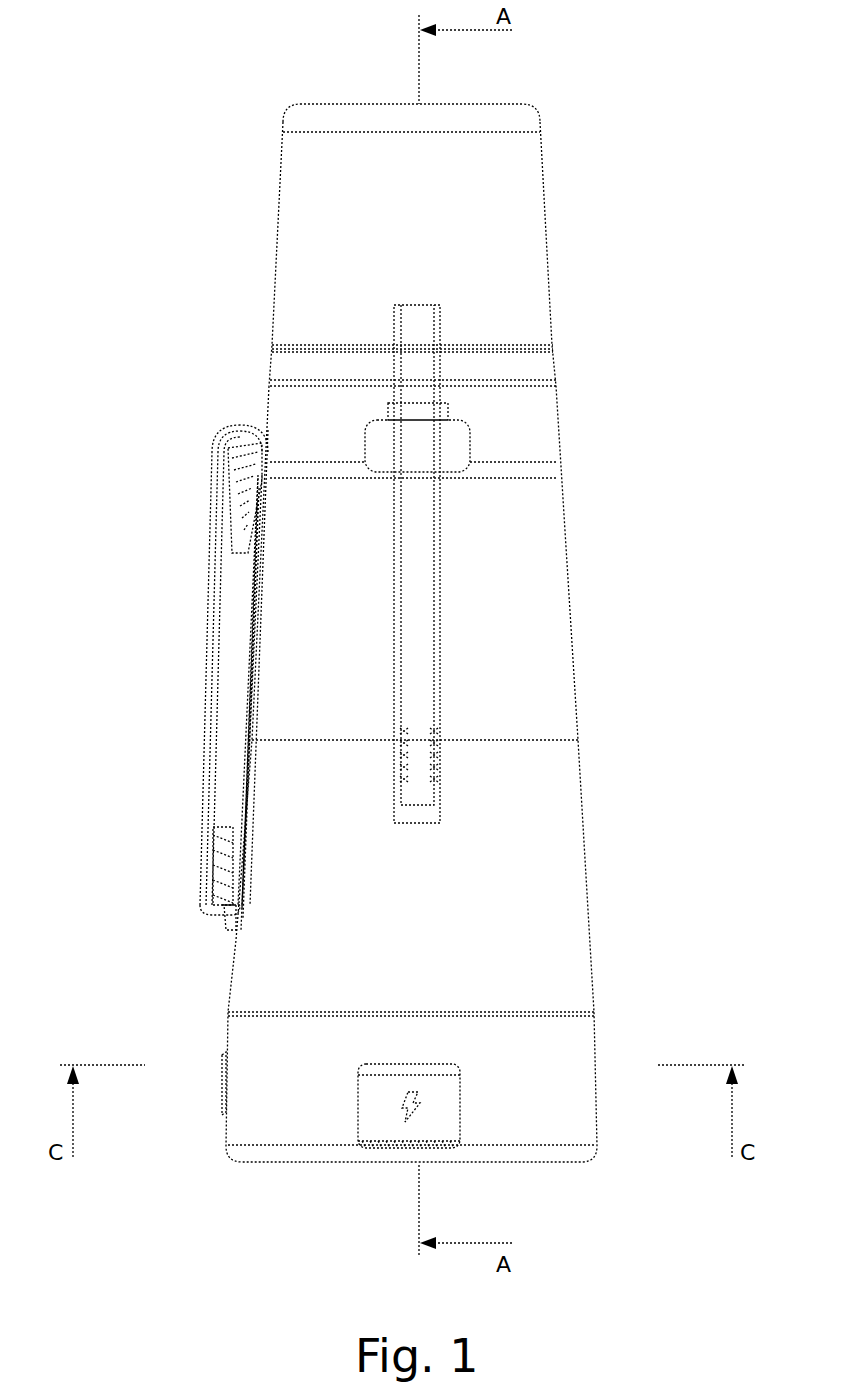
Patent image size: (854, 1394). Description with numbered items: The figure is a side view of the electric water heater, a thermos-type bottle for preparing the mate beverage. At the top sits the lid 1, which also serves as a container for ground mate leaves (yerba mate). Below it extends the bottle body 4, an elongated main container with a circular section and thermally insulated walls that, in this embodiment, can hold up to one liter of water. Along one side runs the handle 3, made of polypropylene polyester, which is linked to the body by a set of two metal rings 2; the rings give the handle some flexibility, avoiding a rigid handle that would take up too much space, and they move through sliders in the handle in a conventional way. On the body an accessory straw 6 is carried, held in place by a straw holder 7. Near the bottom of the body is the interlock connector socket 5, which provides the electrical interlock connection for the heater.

The lid 1 is at (332, 216).
The metal rings 2 is at (243, 474).
The handle 3 is at (232, 707).
The bottle body 4 is at (326, 958).
The interlock connector socket 5 is at (396, 1113).
The accessory straw 6 is at (425, 604).
The straw holder 7 is at (485, 443).